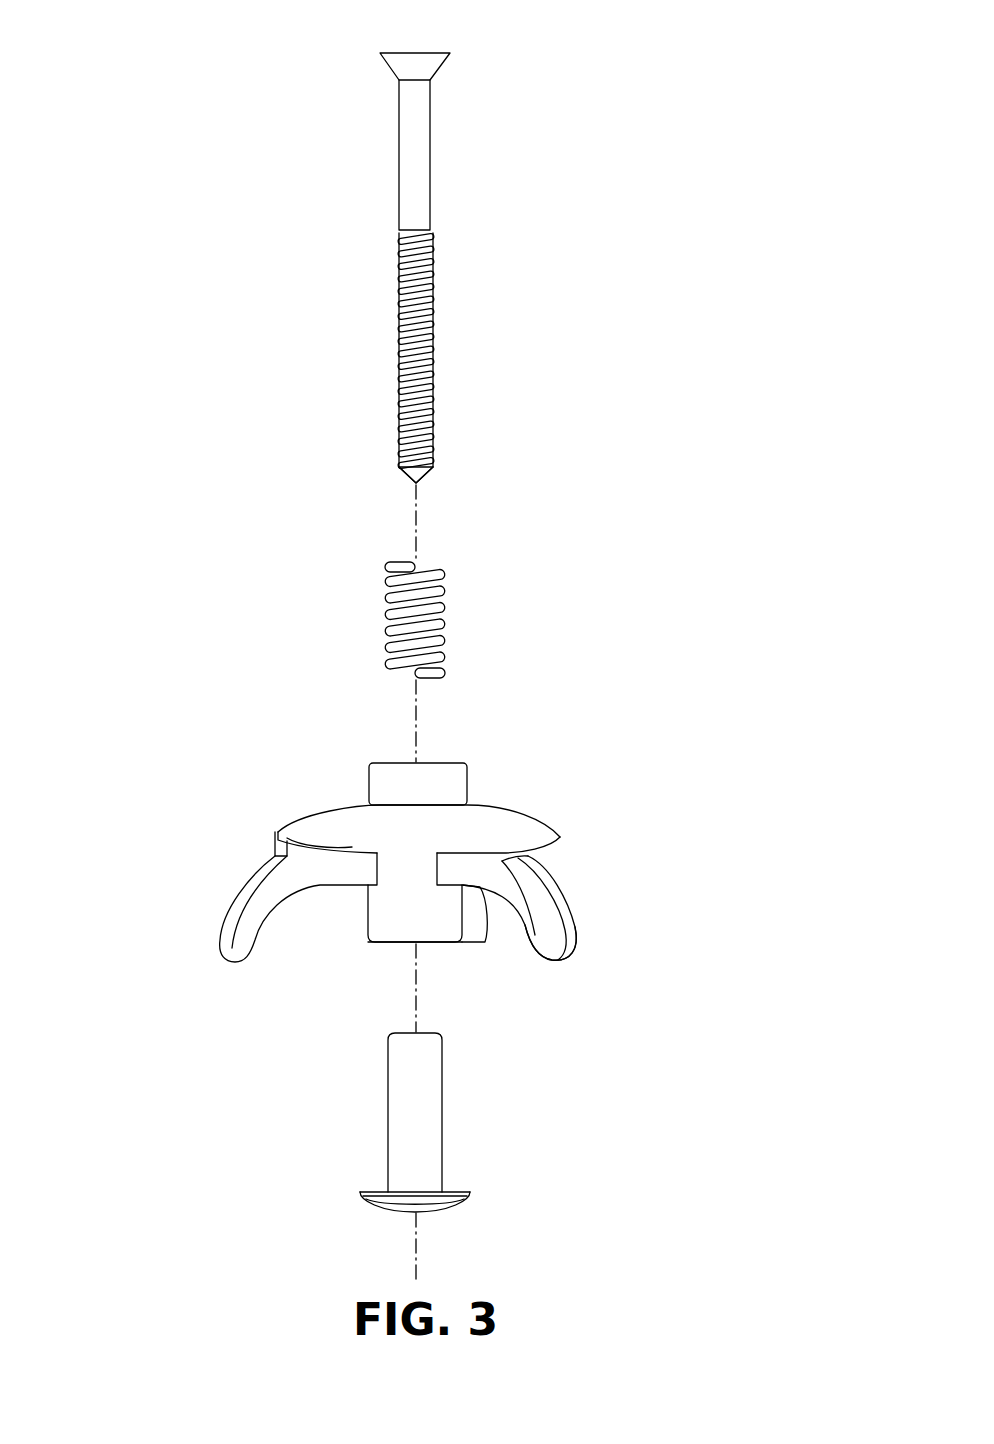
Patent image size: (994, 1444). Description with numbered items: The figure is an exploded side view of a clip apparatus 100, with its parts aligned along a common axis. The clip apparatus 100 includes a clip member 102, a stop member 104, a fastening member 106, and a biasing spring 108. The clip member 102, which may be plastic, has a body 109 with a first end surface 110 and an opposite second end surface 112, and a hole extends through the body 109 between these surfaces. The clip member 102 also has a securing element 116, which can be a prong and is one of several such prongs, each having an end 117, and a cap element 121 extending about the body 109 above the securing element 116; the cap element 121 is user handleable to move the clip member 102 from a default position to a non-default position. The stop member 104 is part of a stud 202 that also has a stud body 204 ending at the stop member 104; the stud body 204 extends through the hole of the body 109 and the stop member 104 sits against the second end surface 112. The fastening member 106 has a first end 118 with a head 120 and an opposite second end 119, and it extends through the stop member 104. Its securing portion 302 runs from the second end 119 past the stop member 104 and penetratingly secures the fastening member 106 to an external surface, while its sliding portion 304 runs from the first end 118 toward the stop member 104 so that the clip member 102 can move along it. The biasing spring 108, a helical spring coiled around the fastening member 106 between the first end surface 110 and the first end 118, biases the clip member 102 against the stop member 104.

The clip apparatus 100 is at (704, 989).
The clip member 102 is at (471, 880).
The stop member 104 is at (458, 1210).
The fastening member 106 is at (455, 253).
The biasing spring 108 is at (445, 602).
The body 109 is at (377, 915).
The first end surface 110 is at (440, 762).
The second end surface 112 is at (437, 942).
The securing element 116 is at (543, 932).
The end 117 is at (555, 960).
The first end 118 is at (418, 98).
The second end 119 is at (418, 483).
The head 120 is at (426, 53).
The cap element 121 is at (322, 822).
The stud 202 is at (477, 1122).
The stud body 204 is at (400, 1100).
The securing portion 302 is at (385, 233).
The sliding portion 304 is at (385, 81).